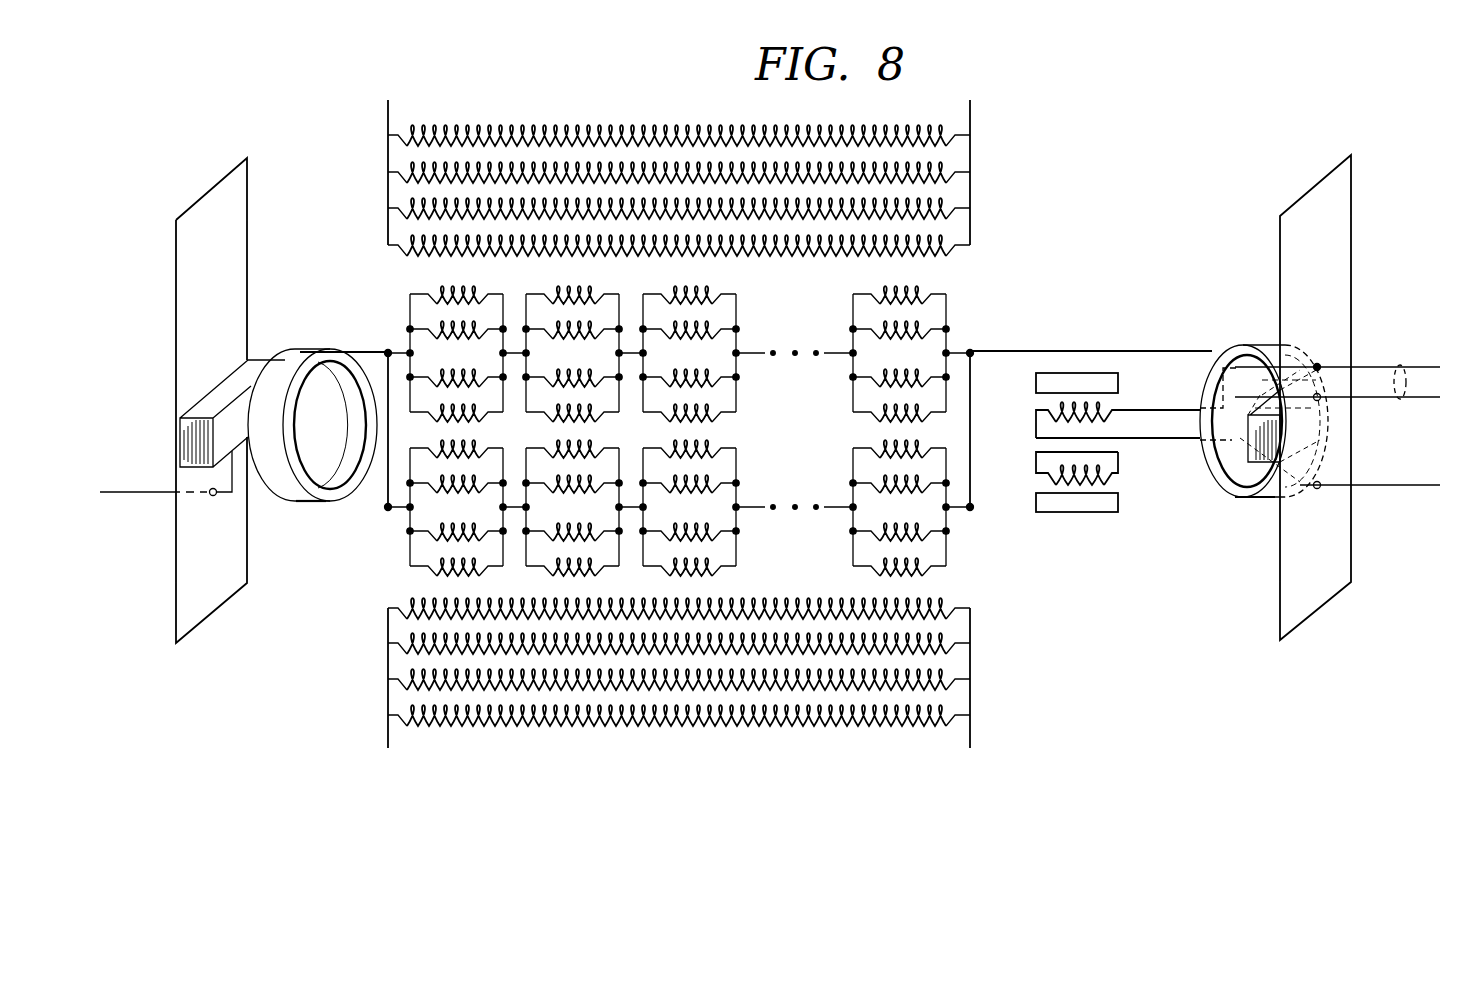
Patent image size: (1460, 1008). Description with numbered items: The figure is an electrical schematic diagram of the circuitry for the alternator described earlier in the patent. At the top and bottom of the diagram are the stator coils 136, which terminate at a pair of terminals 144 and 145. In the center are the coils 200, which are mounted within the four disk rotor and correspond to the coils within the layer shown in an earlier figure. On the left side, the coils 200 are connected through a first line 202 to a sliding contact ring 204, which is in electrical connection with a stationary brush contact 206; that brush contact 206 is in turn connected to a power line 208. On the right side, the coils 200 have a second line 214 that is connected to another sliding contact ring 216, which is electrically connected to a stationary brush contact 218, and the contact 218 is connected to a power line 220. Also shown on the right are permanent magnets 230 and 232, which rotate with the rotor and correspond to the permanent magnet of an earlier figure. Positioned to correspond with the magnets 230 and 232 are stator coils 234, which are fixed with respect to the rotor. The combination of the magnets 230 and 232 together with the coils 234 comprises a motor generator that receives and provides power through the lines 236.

The stator coils 136 is at (972, 182).
The terminal 144 is at (388, 108).
The terminal 145 is at (972, 110).
The coils 200 is at (972, 300).
The first line 202 is at (378, 353).
The sliding contact ring 204 is at (305, 503).
The stationary brush contact 206 is at (255, 356).
The power line 208 is at (148, 492).
The second line 214 is at (1120, 350).
The sliding contact ring 216 is at (1253, 345).
The stationary brush contact 218 is at (1268, 501).
The power line 220 is at (1400, 488).
The permanent magnet 230 is at (1120, 383).
The permanent magnet 232 is at (1050, 513).
The stator coils 234 is at (1038, 410).
The lines 236 is at (1399, 360).